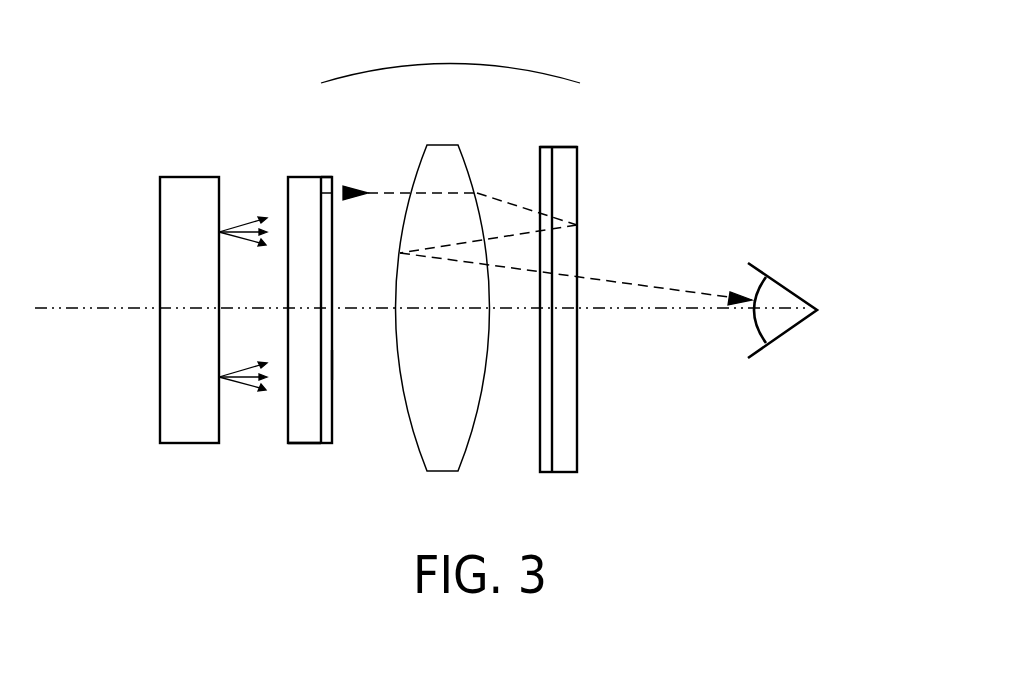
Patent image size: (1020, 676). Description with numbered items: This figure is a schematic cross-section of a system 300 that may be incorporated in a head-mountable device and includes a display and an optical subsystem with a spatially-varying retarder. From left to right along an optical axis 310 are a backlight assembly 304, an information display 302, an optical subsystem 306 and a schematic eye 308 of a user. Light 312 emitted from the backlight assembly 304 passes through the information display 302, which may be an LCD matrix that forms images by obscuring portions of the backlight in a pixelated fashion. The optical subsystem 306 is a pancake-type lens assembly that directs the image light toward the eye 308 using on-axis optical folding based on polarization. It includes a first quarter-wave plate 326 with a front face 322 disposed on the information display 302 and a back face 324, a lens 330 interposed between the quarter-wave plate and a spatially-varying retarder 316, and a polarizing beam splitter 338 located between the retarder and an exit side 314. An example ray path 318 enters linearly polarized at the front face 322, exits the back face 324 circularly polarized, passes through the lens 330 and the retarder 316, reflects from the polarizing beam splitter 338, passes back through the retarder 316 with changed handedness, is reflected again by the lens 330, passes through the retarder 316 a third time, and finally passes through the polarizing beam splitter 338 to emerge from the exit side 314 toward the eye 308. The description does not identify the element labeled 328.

The system 300 is at (297, 57).
The information display 302 is at (305, 176).
The backlight assembly 304 is at (187, 177).
The optical subsystem 306 is at (545, 63).
The eye 308 is at (760, 266).
The optical axis 310 is at (117, 308).
The light 312 is at (247, 392).
The exit side 314 is at (579, 408).
The spatially-varying retarder 316 is at (546, 147).
The ray path 318 is at (517, 202).
The front face 322 is at (320, 432).
The back face 324 is at (333, 368).
The first quarter-wave plate 326 is at (327, 177).
The folded optical path 328 is at (757, 585).
The lens 330 is at (412, 450).
The polarizing beam splitter 338 is at (564, 147).